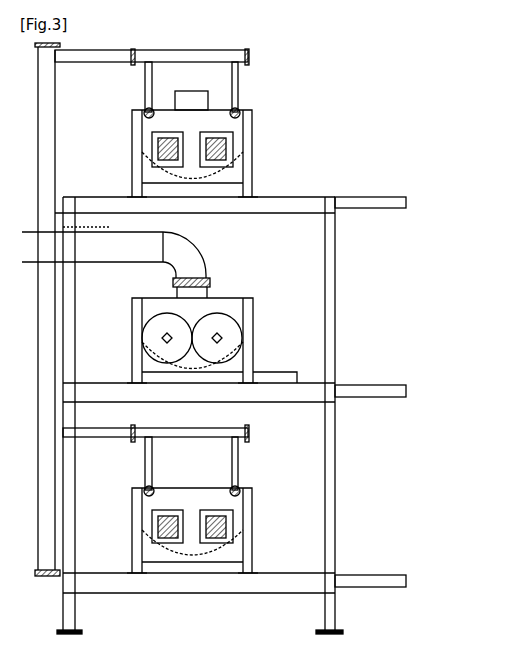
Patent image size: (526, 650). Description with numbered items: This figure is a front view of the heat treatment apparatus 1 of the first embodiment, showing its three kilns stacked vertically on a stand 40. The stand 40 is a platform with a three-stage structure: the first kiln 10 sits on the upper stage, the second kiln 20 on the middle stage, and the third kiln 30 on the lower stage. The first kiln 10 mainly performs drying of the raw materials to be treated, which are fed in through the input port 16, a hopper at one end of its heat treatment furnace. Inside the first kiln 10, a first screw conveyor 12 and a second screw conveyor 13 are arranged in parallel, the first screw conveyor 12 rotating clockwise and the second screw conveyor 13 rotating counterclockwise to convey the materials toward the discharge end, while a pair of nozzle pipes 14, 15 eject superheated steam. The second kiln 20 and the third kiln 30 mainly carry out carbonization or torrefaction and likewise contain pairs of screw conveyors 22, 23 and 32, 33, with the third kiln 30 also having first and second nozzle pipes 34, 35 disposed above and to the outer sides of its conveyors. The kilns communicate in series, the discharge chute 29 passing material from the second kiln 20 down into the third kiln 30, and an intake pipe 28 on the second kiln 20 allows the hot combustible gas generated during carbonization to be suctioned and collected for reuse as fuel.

The heat treatment apparatus 1 is at (477, 238).
The first kiln 10 is at (327, 143).
The first screw conveyor 12 is at (158, 148).
The second screw conveyor 13 is at (230, 150).
The first nozzle pipe 14 is at (133, 122).
The second nozzle pipe 15 is at (250, 118).
The input port 16 is at (200, 102).
The second kiln 20 is at (299, 314).
The first screw conveyor 22 is at (220, 339).
The second screw conveyor 23 is at (162, 338).
The intake pipe 28 is at (193, 248).
The discharge chute 29 is at (207, 287).
The third kiln 30 is at (287, 517).
The first screw conveyor 32 is at (158, 525).
The second screw conveyor 33 is at (235, 528).
The first nozzle pipe 34 is at (133, 500).
The second nozzle pipe 35 is at (245, 500).
The stand 40 is at (336, 278).